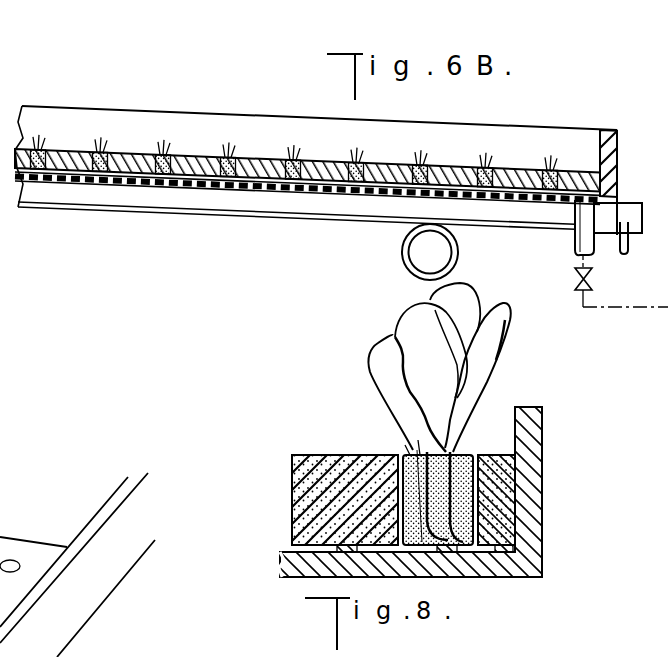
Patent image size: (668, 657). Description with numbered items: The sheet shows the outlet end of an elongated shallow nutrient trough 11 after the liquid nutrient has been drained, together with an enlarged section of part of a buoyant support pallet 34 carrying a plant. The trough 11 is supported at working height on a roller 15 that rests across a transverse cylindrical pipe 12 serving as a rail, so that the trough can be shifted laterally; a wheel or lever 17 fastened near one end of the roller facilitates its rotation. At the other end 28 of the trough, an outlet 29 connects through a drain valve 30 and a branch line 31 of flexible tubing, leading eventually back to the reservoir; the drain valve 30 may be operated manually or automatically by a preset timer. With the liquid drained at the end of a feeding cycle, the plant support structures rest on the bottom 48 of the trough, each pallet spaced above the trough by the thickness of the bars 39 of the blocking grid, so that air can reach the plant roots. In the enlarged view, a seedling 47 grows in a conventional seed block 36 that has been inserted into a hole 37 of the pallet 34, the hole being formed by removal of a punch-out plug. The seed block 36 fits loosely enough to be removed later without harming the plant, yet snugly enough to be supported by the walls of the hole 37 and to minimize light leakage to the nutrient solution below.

In FIG. 8, the trough 11 is at (555, 505).
In FIG. 6B, the cylindrical pipe 12 is at (401, 252).
In FIG. 6B, the roller 15 is at (216, 212).
In FIG. 6B, the wheel or lever 17 is at (630, 247).
In FIG. 6B, the other end 28 is at (652, 152).
In FIG. 6B, the outlet 29 is at (573, 240).
In FIG. 6B, the drain valve 30 is at (593, 280).
In FIG. 6B, the branch line 31 is at (616, 308).
In FIG. 8, the pallet 34 is at (328, 455).
In FIG. 8, the seed block 36 is at (418, 450).
In FIG. 8, the hole 37 is at (483, 455).
In FIG. 8, the bar 39 is at (502, 552).
In FIG. 8, the seedling 47 is at (374, 352).
In FIG. 6B, the bottom 48 is at (128, 186).
In FIG. 8, the bottom 48 is at (292, 578).